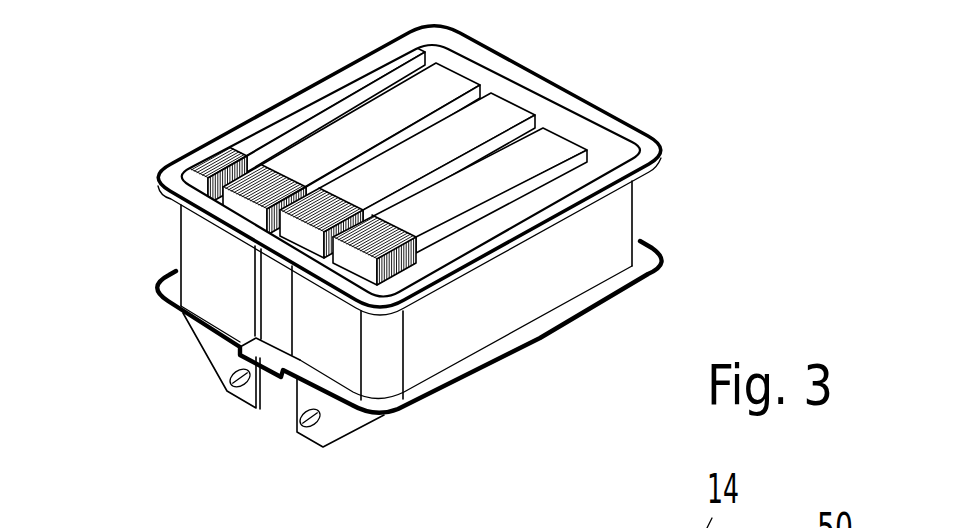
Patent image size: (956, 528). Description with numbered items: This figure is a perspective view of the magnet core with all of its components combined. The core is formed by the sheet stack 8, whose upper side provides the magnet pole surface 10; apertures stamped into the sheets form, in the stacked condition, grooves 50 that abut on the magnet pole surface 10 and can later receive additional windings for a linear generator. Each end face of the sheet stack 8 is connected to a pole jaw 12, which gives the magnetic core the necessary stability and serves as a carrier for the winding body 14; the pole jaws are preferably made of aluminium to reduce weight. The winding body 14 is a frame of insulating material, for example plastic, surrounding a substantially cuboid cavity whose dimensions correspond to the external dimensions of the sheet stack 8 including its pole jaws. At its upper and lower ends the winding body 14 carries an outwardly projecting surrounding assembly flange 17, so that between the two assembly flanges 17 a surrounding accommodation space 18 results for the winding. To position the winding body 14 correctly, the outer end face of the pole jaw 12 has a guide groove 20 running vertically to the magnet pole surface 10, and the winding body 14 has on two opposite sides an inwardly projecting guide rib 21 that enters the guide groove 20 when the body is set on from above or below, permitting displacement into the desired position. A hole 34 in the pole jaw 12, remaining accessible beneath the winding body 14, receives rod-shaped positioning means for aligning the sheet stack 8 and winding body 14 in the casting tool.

The sheet stack 8 is at (470, 71).
The magnet pole surface 10 is at (318, 150).
The pole jaw 12 is at (338, 424).
The winding body 14 is at (186, 148).
The assembly flange 17 is at (650, 153).
The accommodation space 18 is at (635, 215).
The guide groove 20 is at (280, 398).
The guide rib 21 is at (270, 236).
The hole 34 is at (306, 428).
The groove 50 is at (484, 216).